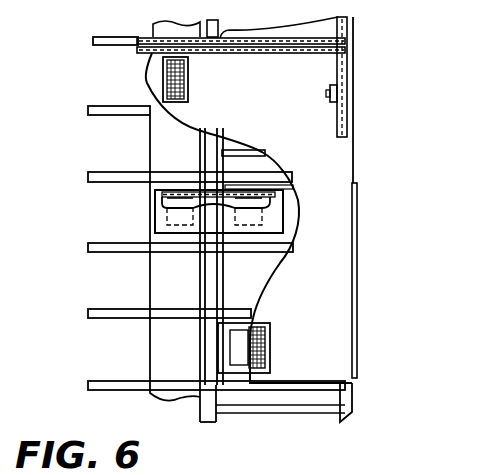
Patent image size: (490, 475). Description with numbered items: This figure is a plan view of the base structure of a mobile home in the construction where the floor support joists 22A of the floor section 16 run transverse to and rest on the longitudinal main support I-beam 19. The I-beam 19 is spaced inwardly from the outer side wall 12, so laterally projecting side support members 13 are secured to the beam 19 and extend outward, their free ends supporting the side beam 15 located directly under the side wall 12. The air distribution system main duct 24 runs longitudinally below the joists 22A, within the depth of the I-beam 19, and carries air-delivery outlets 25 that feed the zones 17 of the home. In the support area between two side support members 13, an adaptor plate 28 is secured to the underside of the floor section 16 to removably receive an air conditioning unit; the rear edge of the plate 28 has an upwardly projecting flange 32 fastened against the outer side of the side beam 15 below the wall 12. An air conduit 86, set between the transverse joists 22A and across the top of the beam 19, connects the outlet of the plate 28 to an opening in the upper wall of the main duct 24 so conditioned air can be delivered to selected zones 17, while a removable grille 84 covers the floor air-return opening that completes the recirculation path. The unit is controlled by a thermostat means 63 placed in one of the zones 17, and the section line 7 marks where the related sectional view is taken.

The side wall 12 is at (356, 32).
The side support member 13 is at (246, 155).
The side beam 15 is at (350, 399).
The floor section 16 is at (333, 157).
The zone 17 is at (155, 35).
The main support I-beam 19 is at (212, 295).
The floor support joist 22A is at (150, 170).
The air distribution system main duct 24 is at (150, 285).
The air-delivery outlet 25 is at (189, 79).
The adaptor plate 28 is at (266, 287).
The upwardly projecting flange 32 is at (358, 283).
The thermostat means 63 is at (327, 96).
The section line 7- 7 is at (140, 343).
The grille 84 is at (254, 332).
The air conduit 86 is at (155, 213).